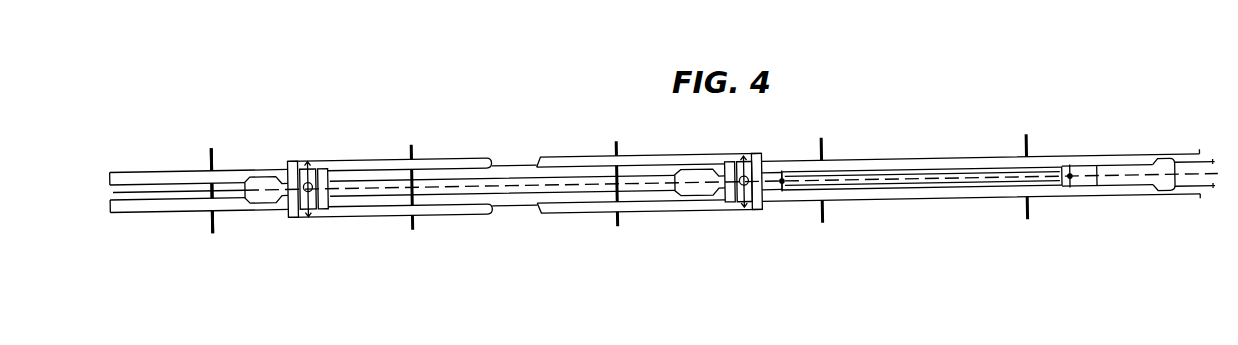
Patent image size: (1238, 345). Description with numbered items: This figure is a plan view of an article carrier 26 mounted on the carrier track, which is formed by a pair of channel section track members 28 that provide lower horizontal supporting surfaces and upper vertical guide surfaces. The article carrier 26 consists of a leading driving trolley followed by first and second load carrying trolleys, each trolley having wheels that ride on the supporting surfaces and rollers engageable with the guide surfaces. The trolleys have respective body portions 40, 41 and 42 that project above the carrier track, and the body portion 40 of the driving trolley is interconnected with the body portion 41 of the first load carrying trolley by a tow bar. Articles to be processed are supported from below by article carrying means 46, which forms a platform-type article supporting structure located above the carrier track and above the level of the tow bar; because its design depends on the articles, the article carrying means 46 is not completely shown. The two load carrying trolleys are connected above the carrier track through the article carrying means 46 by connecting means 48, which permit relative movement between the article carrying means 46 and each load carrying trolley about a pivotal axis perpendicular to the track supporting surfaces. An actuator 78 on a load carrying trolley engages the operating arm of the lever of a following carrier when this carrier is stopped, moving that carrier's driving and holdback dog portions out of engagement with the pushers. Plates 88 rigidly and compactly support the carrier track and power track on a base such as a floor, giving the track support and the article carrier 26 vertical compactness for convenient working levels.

The article carrier 26 is at (643, 148).
The channel section track members 28 is at (183, 170).
The body portion 40 is at (1128, 188).
The body portion 41 is at (718, 206).
The body portion 42 is at (288, 200).
The article carrying means 46 is at (486, 214).
The connecting means 48 is at (309, 186).
The actuator 78 is at (263, 206).
The plates 88 is at (217, 152).